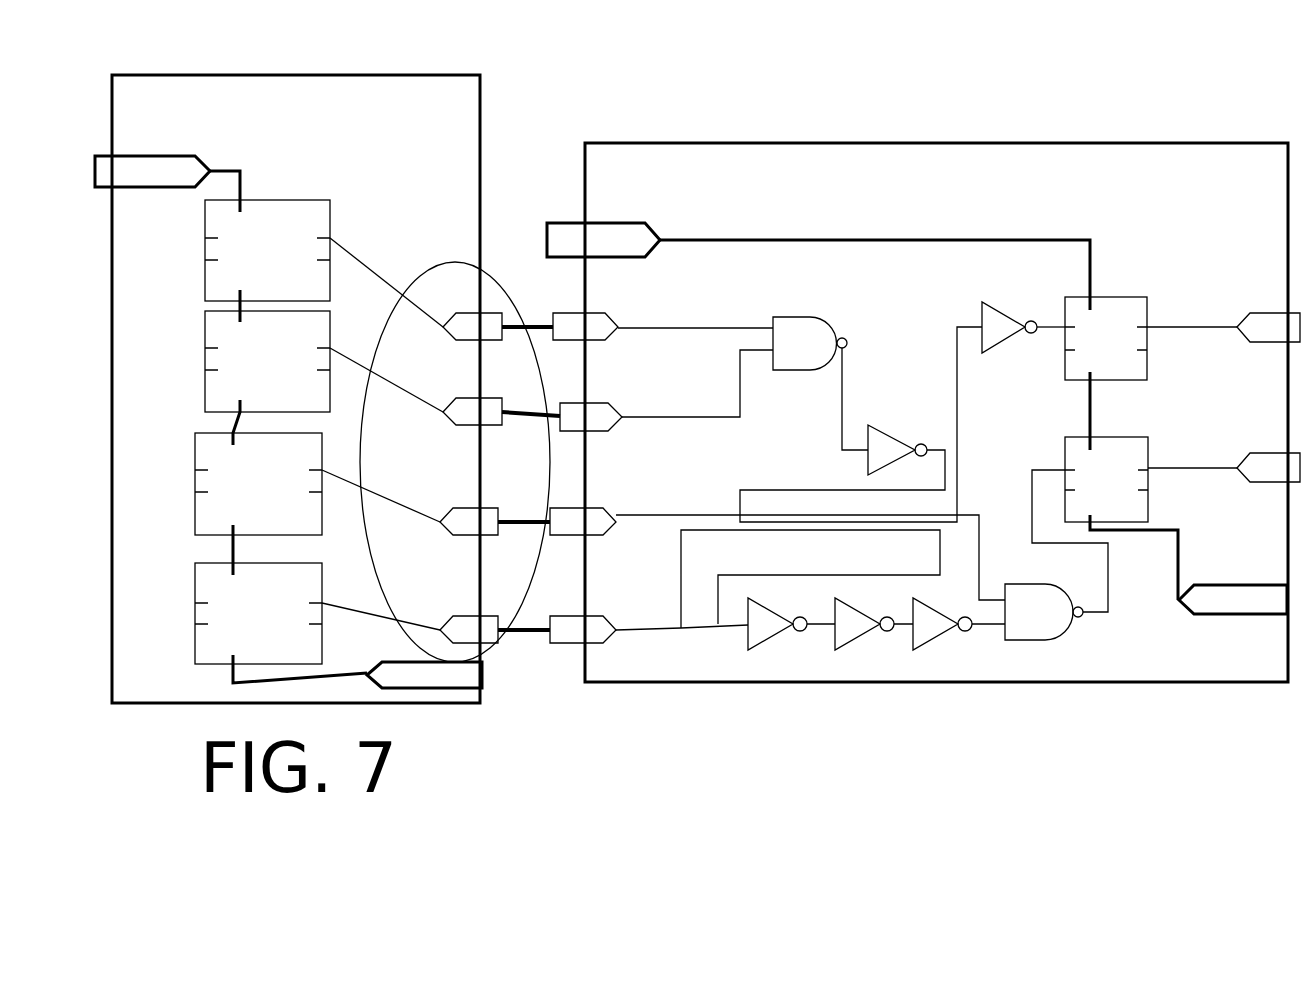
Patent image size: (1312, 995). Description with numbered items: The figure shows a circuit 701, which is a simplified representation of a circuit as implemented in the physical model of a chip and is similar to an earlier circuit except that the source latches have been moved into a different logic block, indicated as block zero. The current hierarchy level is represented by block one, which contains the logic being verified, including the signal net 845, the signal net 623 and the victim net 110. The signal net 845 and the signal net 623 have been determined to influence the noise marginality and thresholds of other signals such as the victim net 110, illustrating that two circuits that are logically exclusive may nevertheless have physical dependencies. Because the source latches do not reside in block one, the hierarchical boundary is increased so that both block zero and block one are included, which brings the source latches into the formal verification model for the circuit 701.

The circuit 701 is at (992, 42).
The victim NET110 110 is at (861, 424).
The signal NET845 845 is at (810, 550).
The signal NET623 623 is at (810, 579).